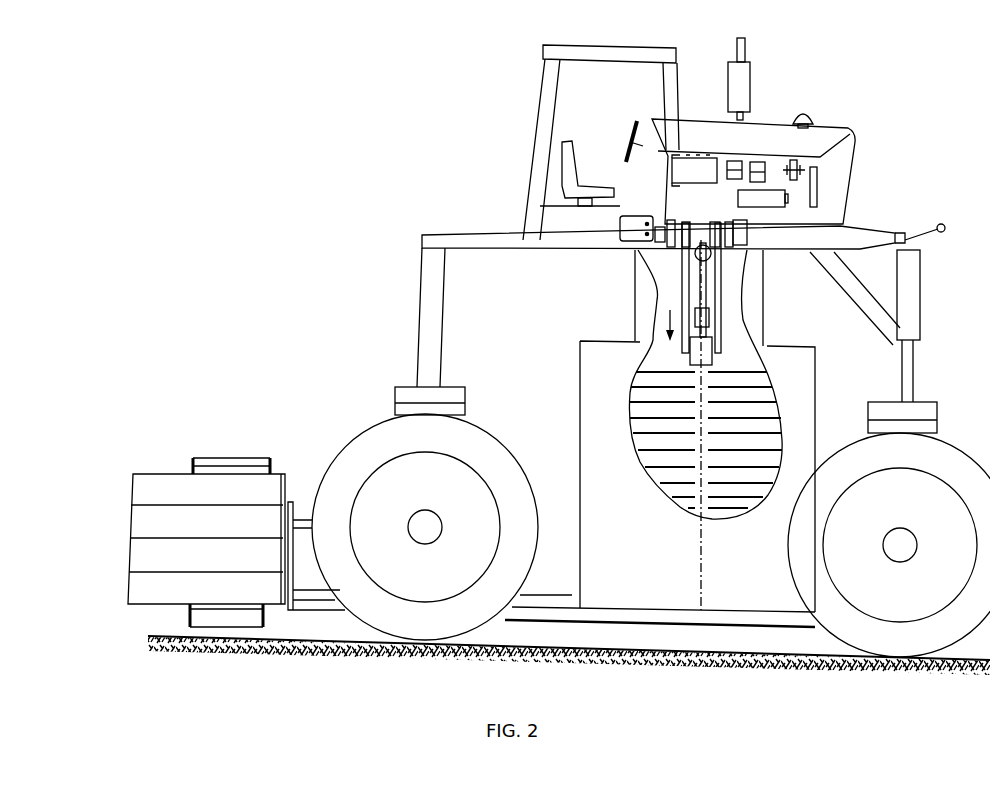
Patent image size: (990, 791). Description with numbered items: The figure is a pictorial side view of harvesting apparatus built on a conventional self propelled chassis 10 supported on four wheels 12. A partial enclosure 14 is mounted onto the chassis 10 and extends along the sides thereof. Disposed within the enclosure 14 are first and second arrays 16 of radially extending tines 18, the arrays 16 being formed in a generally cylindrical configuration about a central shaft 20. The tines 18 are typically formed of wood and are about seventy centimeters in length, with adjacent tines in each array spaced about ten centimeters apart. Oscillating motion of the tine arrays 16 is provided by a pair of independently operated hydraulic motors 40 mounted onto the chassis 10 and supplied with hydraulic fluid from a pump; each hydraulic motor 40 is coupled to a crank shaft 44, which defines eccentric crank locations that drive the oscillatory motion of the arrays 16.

The self propelled chassis 10 is at (473, 244).
The wheels 12 is at (356, 458).
The partial enclosure 14 is at (586, 412).
The arrays of radially extending tines 16 is at (671, 314).
The tines 18 is at (655, 368).
The central shaft 20 is at (797, 163).
The hydraulic motor 40 is at (628, 221).
The crank shaft 44 is at (677, 222).